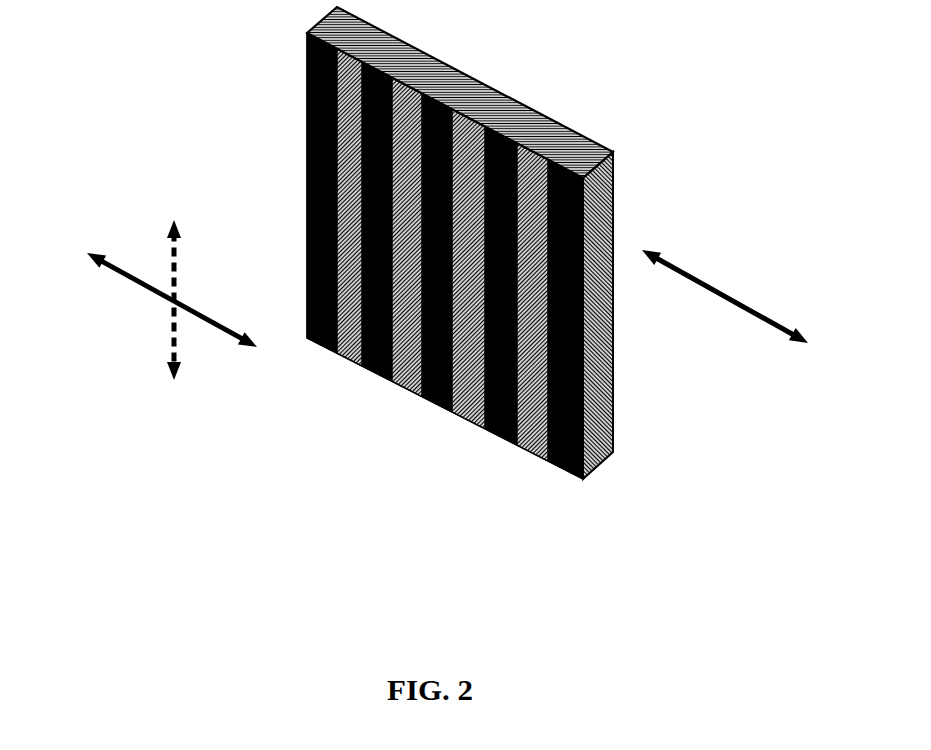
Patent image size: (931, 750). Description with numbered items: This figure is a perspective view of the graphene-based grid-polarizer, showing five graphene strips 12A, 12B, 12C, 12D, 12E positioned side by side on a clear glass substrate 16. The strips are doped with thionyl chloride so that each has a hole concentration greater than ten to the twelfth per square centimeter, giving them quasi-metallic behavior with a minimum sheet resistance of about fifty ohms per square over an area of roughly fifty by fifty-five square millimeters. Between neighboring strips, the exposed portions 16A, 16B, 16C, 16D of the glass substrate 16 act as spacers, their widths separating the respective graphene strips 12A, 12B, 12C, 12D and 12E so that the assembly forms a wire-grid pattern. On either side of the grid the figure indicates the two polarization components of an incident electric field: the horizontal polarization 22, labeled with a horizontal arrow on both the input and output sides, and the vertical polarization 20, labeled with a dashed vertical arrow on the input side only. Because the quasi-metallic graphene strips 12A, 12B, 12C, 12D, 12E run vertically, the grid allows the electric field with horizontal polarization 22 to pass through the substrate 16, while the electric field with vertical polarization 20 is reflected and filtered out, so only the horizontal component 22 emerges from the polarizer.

The graphene strip 12A is at (317, 347).
The graphene strip 12B is at (380, 380).
The graphene strip 12C is at (435, 410).
The graphene strip 12D is at (501, 440).
The graphene strip 12E is at (563, 473).
The clear glass substrate 16 is at (625, 350).
The portion of the glass substrate 16A is at (352, 362).
The portion of the glass substrate 16B is at (409, 389).
The portion of the glass substrate 16C is at (469, 424).
The portion of the glass substrate 16D is at (532, 455).
The vertical polarization 20 is at (142, 402).
The horizontal polarization 22 is at (83, 197).